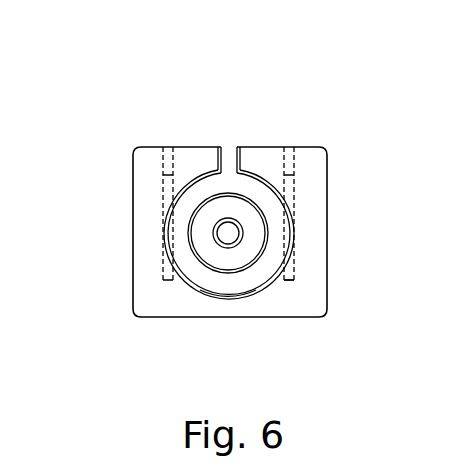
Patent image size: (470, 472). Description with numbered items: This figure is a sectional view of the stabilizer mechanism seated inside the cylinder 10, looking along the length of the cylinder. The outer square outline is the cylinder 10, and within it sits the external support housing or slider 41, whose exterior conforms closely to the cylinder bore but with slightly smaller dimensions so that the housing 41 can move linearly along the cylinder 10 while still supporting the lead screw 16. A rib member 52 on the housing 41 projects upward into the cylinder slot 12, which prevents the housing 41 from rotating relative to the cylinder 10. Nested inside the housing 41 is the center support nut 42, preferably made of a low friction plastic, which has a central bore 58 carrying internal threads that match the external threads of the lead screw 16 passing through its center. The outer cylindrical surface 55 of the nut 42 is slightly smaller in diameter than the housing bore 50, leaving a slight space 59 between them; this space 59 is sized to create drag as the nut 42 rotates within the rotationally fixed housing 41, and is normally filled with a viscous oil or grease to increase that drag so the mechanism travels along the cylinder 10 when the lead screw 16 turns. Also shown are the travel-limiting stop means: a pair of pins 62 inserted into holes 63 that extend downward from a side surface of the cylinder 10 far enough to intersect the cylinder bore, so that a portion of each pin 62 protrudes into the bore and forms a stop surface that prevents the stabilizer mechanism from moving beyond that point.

The cylinder 10 is at (320, 178).
The cylinder slot 12 is at (222, 150).
The lead screw 16 is at (233, 230).
The external support housing or slider 41 is at (202, 272).
The center support nut 42 is at (253, 220).
The housing bore 50 is at (292, 265).
The rib member 52 is at (232, 153).
The outer cylindrical surface 55 is at (247, 272).
The central bore 58 is at (240, 262).
The space 59 is at (246, 243).
The pin 62 is at (165, 190).
The hole 63 is at (165, 157).